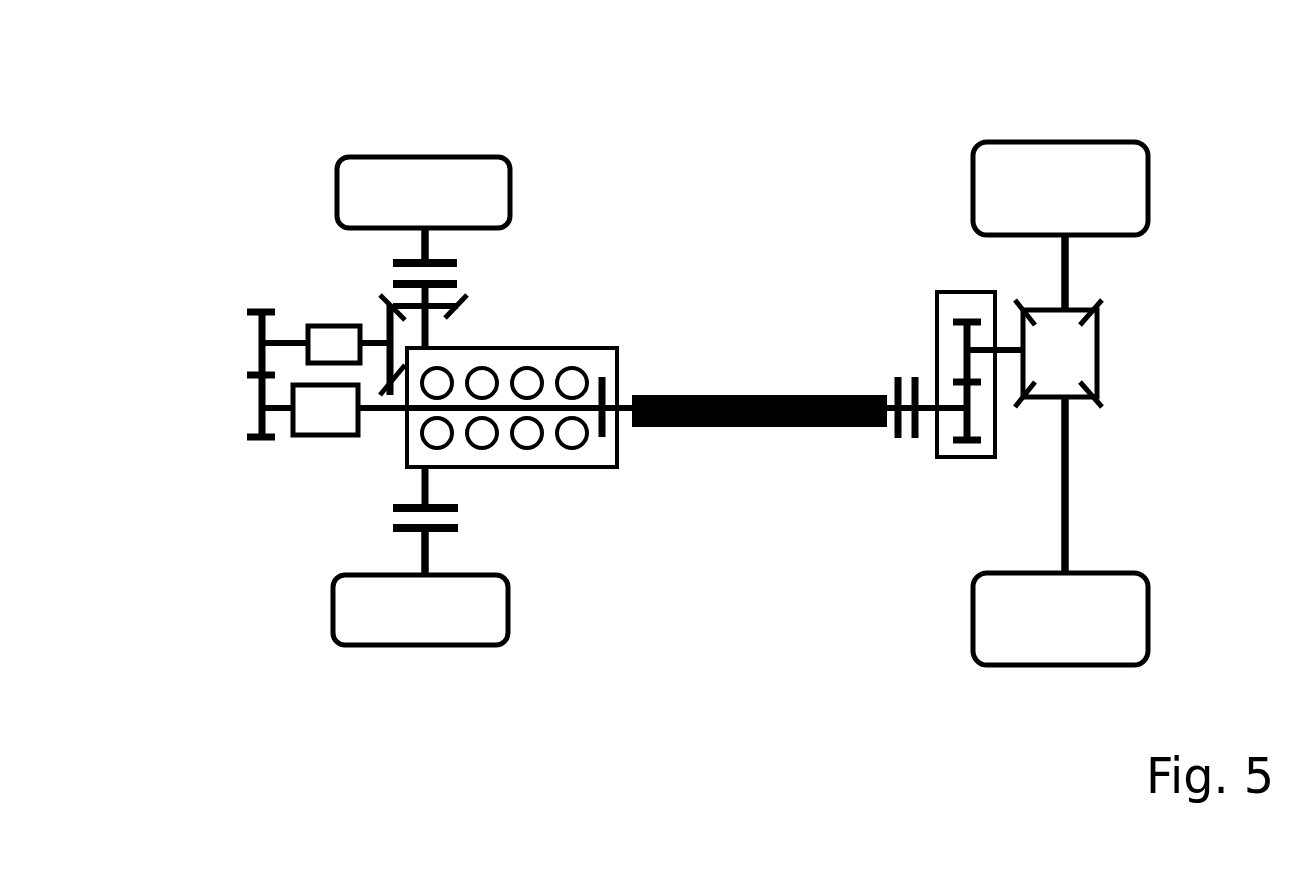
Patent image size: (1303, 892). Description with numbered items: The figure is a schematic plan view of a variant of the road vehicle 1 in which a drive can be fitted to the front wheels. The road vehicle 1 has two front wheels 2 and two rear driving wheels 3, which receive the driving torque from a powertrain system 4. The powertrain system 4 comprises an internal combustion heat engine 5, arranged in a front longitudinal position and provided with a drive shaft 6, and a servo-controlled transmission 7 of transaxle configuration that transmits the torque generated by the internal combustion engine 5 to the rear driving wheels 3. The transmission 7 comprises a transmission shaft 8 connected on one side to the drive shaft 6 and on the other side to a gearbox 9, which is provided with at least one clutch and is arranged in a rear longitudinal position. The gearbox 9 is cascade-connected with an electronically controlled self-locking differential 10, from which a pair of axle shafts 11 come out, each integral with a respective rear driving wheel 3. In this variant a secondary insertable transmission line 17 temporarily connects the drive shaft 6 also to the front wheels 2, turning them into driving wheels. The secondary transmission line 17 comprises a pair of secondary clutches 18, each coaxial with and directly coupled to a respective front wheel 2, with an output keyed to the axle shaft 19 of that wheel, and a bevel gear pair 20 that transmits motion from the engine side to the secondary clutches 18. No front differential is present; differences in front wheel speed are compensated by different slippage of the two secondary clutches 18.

The road vehicle 1 is at (695, 688).
The front wheels 2 is at (465, 175).
The rear driving wheels 3 is at (1110, 168).
The powertrain system 4 is at (298, 122).
The internal combustion heat engine 5 is at (590, 360).
The drive shaft 6 is at (595, 405).
The servo-controlled transmission 7 is at (767, 220).
The transmission shaft 8 is at (778, 430).
The gearbox 9 is at (945, 447).
The electronically controlled self-locking differential 10 is at (1068, 370).
The axle shafts 11 is at (1070, 258).
The secondary insertable transmission line 17 is at (212, 383).
The secondary clutches 18 is at (405, 276).
The axle shaft 19 is at (430, 245).
The bevel gear pair 20 is at (463, 306).